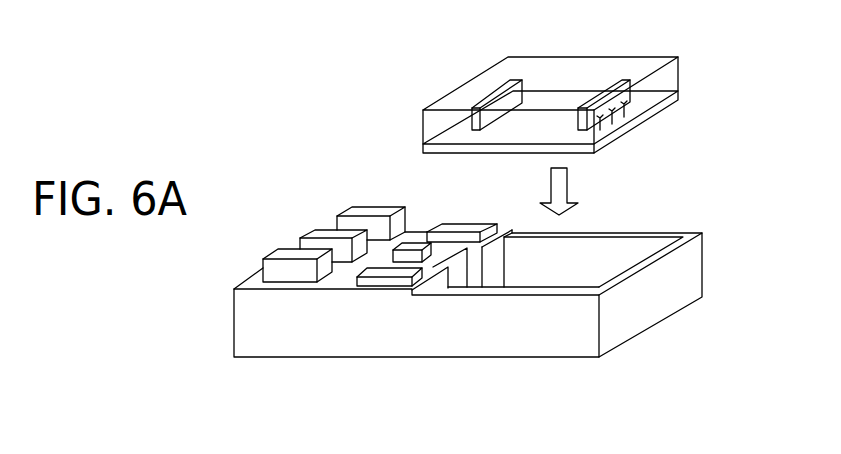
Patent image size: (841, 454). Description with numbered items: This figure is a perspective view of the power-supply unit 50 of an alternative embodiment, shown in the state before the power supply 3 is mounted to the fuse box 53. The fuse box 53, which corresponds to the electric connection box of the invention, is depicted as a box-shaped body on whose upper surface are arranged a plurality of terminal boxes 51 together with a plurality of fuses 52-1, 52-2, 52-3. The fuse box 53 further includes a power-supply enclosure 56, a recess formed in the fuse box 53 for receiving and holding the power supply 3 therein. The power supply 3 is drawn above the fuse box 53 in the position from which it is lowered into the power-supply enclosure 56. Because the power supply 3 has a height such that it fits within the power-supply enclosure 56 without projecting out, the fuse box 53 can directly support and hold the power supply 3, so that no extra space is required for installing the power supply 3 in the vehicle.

The power supply 3 is at (565, 61).
The power-supply unit 50 is at (376, 133).
The terminal box 51 is at (338, 222).
The fuse 52-1 is at (382, 281).
The fuse 52-2 is at (410, 246).
The fuse 52-3 is at (460, 224).
The fuse box 53 is at (238, 327).
The power-supply enclosure 56 is at (693, 265).